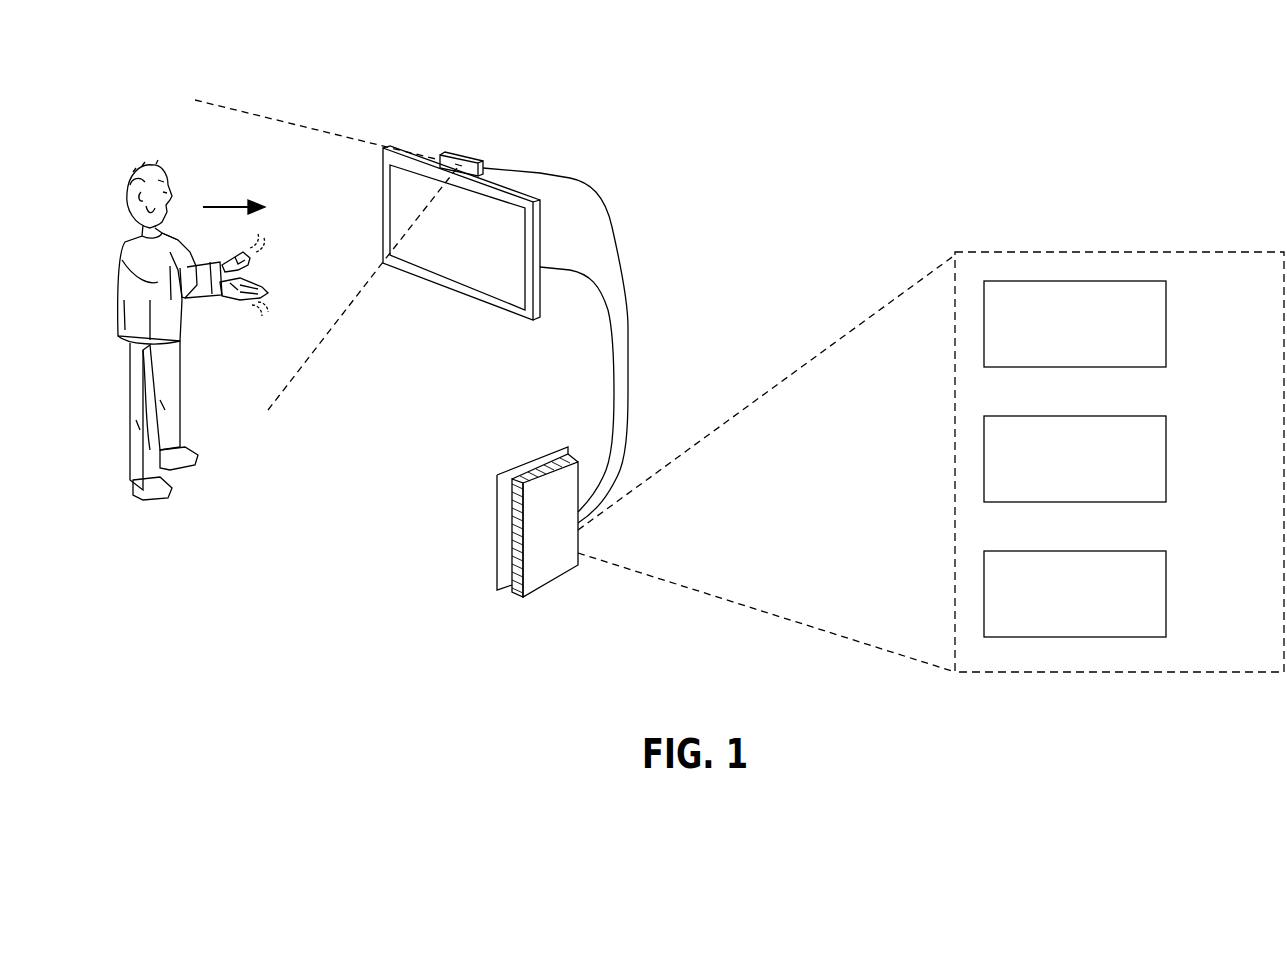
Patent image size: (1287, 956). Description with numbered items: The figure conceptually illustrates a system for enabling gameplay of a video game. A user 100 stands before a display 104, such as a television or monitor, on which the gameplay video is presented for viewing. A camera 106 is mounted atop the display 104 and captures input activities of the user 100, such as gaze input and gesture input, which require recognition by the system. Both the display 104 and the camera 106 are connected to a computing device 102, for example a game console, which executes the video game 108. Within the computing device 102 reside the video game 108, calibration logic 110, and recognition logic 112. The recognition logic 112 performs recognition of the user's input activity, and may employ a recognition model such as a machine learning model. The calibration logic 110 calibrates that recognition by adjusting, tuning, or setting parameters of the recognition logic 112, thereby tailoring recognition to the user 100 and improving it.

The user 100 is at (150, 165).
The computing device 102 is at (563, 578).
The display 104 is at (470, 300).
The camera 106 is at (475, 152).
The video game 108 is at (1166, 331).
The calibration logic 110 is at (1166, 456).
The recognition logic 112 is at (1166, 601).